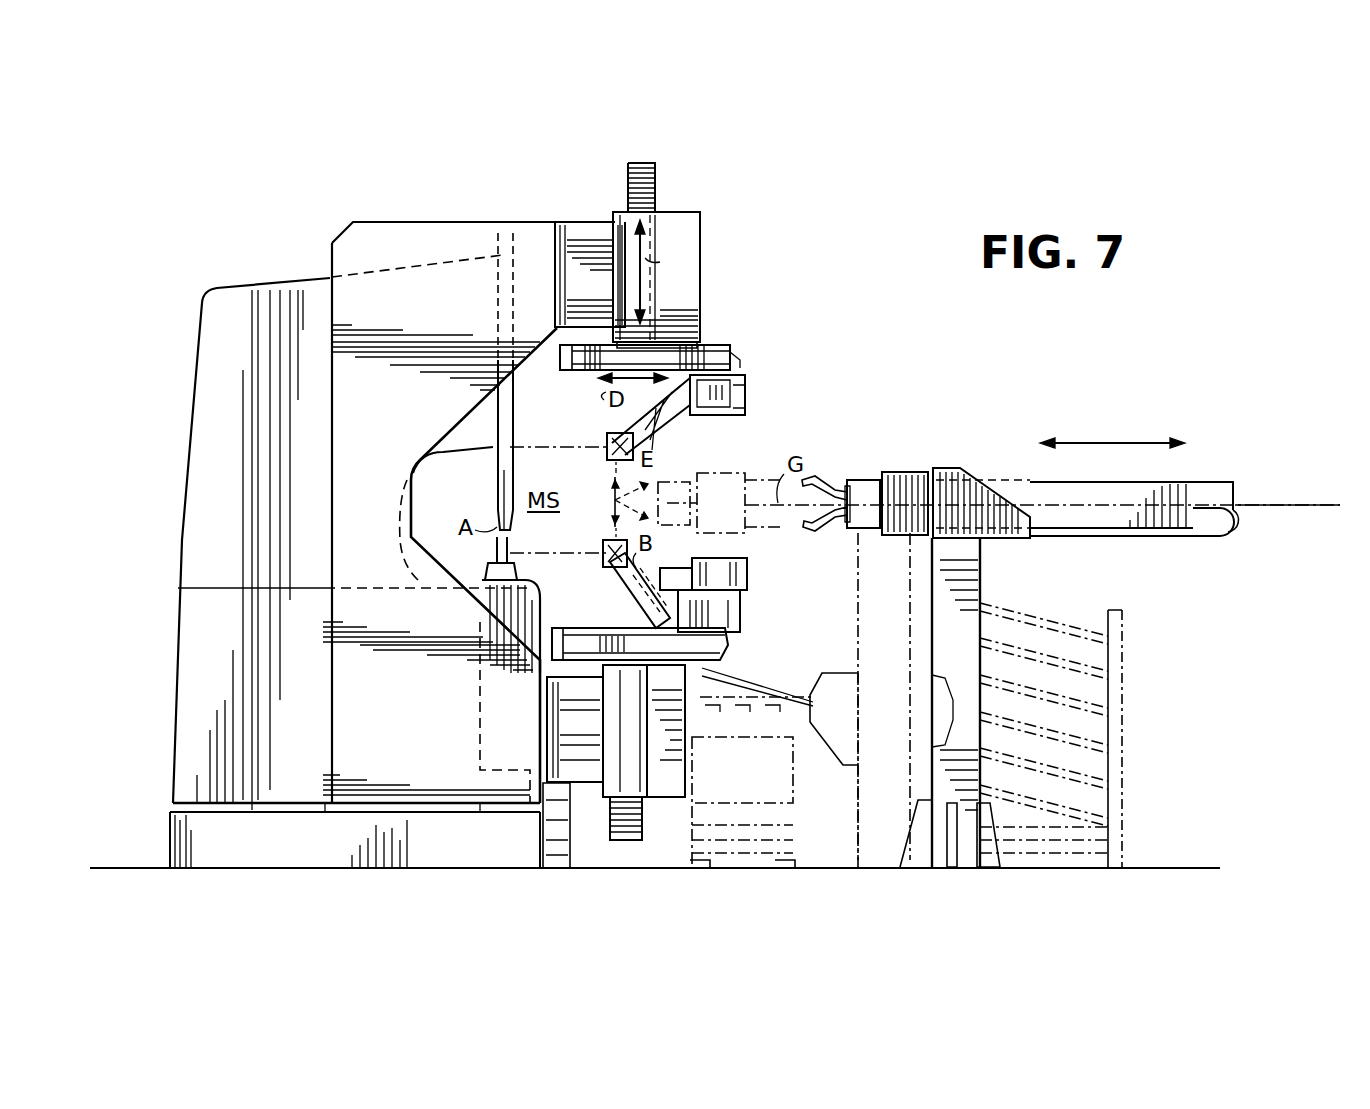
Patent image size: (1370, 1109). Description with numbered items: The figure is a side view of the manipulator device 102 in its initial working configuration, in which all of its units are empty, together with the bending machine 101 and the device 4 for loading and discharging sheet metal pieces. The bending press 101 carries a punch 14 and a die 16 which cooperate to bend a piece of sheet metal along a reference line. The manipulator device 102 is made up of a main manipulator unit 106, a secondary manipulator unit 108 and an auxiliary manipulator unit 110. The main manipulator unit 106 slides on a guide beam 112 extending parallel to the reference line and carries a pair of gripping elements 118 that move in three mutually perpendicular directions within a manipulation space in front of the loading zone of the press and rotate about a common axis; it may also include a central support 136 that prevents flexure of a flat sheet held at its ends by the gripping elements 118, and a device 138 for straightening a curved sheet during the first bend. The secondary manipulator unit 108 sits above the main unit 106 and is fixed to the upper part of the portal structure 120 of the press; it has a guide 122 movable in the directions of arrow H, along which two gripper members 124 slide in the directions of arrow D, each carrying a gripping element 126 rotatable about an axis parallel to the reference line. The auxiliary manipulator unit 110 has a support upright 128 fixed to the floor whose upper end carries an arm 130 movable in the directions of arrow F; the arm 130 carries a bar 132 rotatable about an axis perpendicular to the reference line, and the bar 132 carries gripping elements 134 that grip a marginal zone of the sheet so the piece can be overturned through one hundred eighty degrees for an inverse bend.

The bending machine 101 is at (468, 192).
The manipulator device 102 is at (845, 290).
The main manipulator unit 106 is at (750, 622).
The secondary manipulator unit 108 is at (742, 338).
The auxiliary manipulator unit 110 is at (1003, 468).
The guide beam 112 is at (545, 745).
The gripping elements 118 is at (607, 548).
The portal structure 120 is at (533, 240).
The guide 122 is at (707, 353).
The gripper members 124 is at (716, 426).
The gripping element 126 is at (610, 440).
The support upright 128 is at (980, 572).
The arm 130 is at (1192, 492).
The bar 132 is at (860, 485).
The gripping elements 134 is at (840, 525).
The central support 136 is at (660, 615).
The device for straightening 138 is at (747, 563).
The punch 14 is at (497, 520).
The die 16 is at (497, 553).
The device for loading and discharging 4 is at (1122, 646).